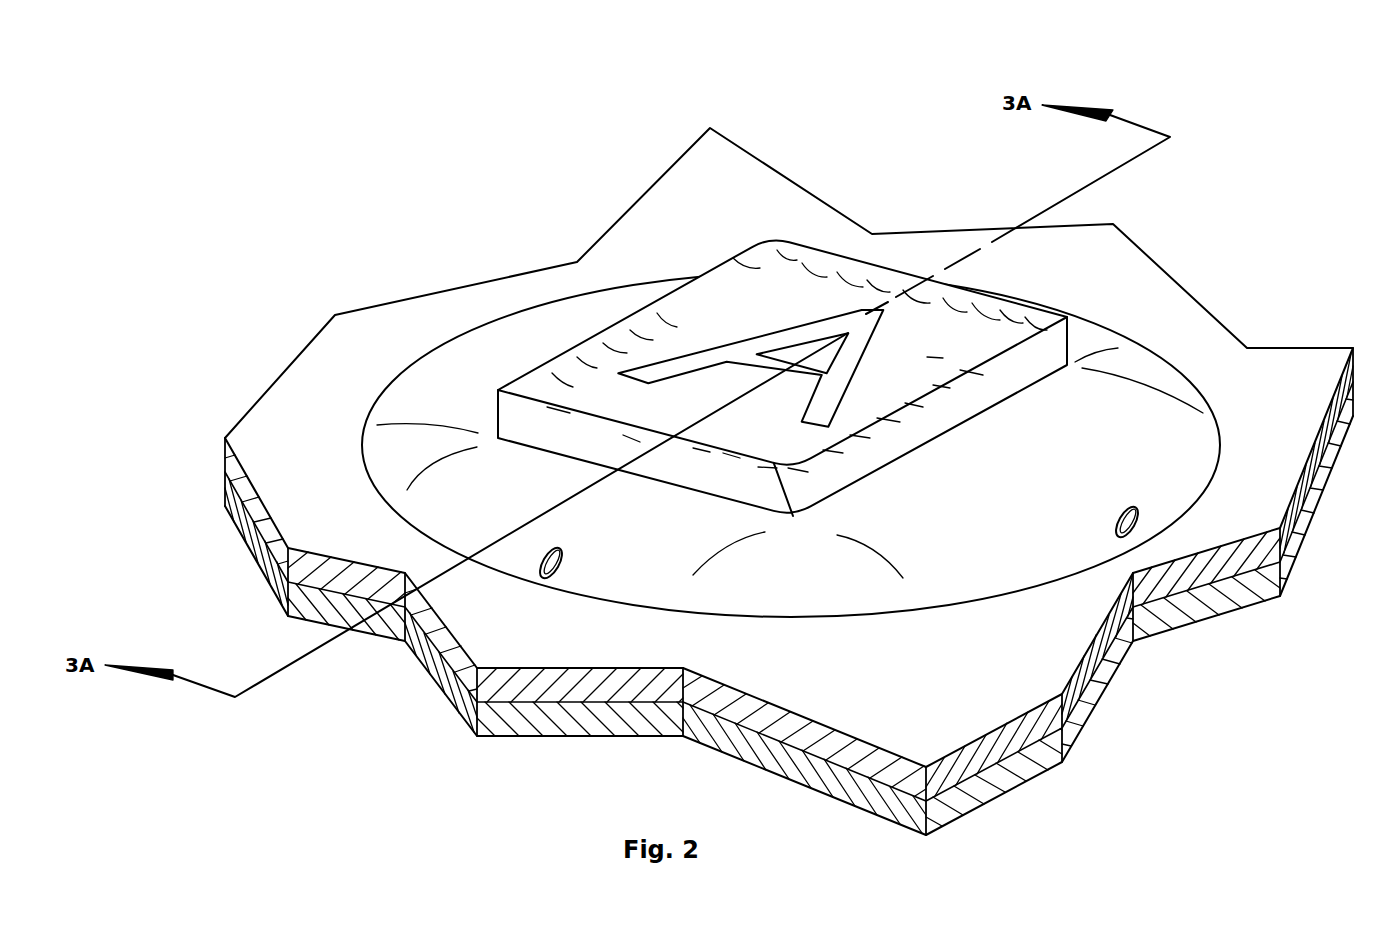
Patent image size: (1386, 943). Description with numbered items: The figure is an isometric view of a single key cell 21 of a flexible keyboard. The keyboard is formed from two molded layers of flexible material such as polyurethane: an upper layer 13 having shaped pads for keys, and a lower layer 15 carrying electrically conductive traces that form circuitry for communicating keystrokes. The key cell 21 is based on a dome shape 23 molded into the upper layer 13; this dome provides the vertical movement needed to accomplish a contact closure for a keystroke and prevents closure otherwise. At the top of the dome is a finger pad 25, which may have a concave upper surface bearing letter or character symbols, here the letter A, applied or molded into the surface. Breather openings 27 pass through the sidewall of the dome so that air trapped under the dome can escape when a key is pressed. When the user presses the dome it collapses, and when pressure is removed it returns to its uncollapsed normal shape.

The key cell 21 is at (398, 103).
The upper layer 13 is at (275, 418).
The lower layer 15 is at (237, 515).
The dome shape 23 is at (518, 338).
The finger pad 25 is at (820, 250).
The breather openings 27 is at (562, 540).